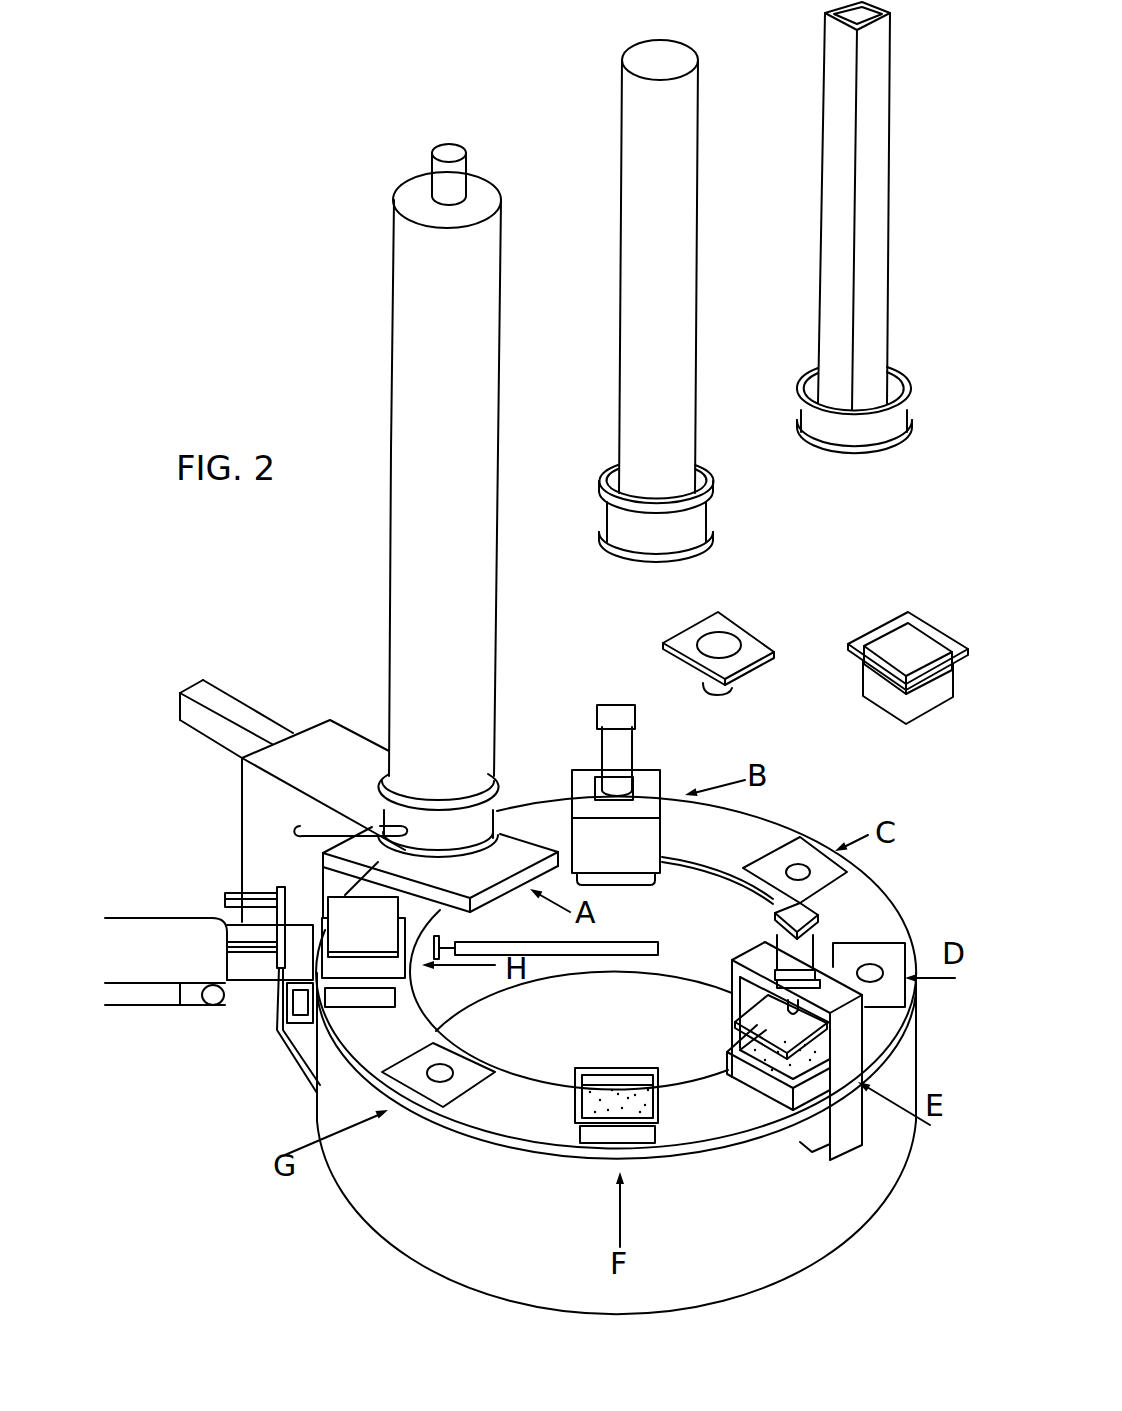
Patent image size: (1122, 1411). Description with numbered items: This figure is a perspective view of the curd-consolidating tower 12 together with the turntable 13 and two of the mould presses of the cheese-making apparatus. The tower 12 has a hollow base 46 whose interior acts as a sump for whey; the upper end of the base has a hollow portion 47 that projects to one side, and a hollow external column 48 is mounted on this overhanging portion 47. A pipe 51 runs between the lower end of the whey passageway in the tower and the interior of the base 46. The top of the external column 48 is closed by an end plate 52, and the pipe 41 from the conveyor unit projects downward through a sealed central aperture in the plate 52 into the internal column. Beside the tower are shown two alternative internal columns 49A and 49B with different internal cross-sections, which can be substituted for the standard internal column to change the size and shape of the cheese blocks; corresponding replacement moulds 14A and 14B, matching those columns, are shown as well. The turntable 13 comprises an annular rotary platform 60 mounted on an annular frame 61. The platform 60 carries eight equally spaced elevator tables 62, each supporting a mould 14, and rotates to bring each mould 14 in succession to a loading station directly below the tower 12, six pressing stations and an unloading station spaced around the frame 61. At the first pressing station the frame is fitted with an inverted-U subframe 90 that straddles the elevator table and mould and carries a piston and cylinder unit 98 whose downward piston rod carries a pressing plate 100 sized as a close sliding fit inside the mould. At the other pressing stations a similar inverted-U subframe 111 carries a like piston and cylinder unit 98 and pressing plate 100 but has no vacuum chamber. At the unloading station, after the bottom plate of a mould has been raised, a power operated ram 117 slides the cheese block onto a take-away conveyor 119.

The tower 12 is at (433, 491).
The pipe 41 is at (463, 162).
The end plate 52 is at (418, 180).
The external column 48 is at (390, 490).
The internal column 49A is at (698, 190).
The internal column 49B is at (818, 245).
The mould 14A is at (742, 637).
The mould 14B is at (926, 618).
The hollow base 46 is at (265, 828).
The pipe 51 is at (345, 828).
The hollow portion 47 is at (520, 845).
The piston and cylinder unit 98 is at (633, 752).
The subframe 90 is at (660, 778).
The elevator table 62 is at (790, 855).
The annular rotary platform 60 is at (873, 883).
The annular frame 61 is at (917, 1062).
The turntable 13 is at (629, 1056).
The subframe 111 is at (858, 1040).
The pressing plate 100 is at (763, 1018).
The mould 14 is at (358, 997).
The power operated ram 117 is at (652, 927).
The take-away conveyor 119 is at (180, 1005).